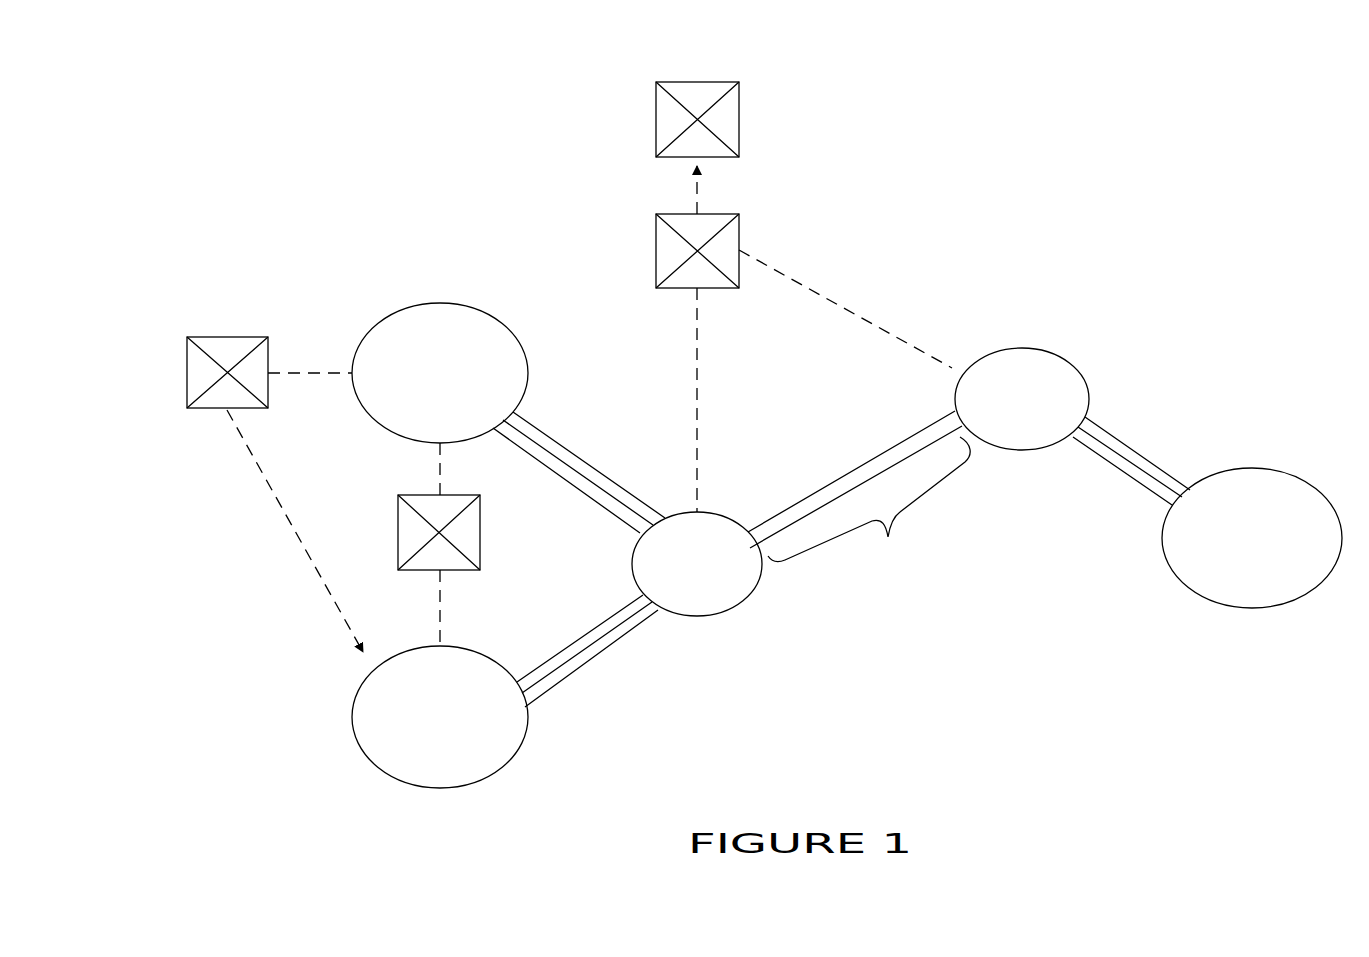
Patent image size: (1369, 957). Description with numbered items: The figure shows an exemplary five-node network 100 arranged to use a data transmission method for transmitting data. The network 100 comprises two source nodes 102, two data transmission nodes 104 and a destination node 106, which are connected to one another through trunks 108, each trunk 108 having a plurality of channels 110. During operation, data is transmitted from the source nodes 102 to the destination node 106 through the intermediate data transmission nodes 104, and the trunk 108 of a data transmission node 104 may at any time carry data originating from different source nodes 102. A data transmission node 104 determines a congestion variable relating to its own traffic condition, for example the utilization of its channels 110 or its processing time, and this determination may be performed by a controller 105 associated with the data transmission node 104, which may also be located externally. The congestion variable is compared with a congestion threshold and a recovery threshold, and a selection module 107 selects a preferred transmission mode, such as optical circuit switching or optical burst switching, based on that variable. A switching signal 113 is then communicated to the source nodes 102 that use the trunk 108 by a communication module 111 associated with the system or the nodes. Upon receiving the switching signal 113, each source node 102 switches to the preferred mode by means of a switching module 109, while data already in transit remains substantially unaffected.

The network 100 is at (1150, 208).
The source node 102 is at (452, 303).
The data transmission node 104 is at (705, 617).
The controller 105 is at (728, 237).
The destination node 106 is at (1203, 598).
The selection module 107 is at (728, 100).
The trunk 108 is at (869, 503).
The switching module 109 is at (480, 528).
The channel 110 is at (830, 490).
The communication module 111 is at (190, 398).
The switching signal 113 is at (298, 372).